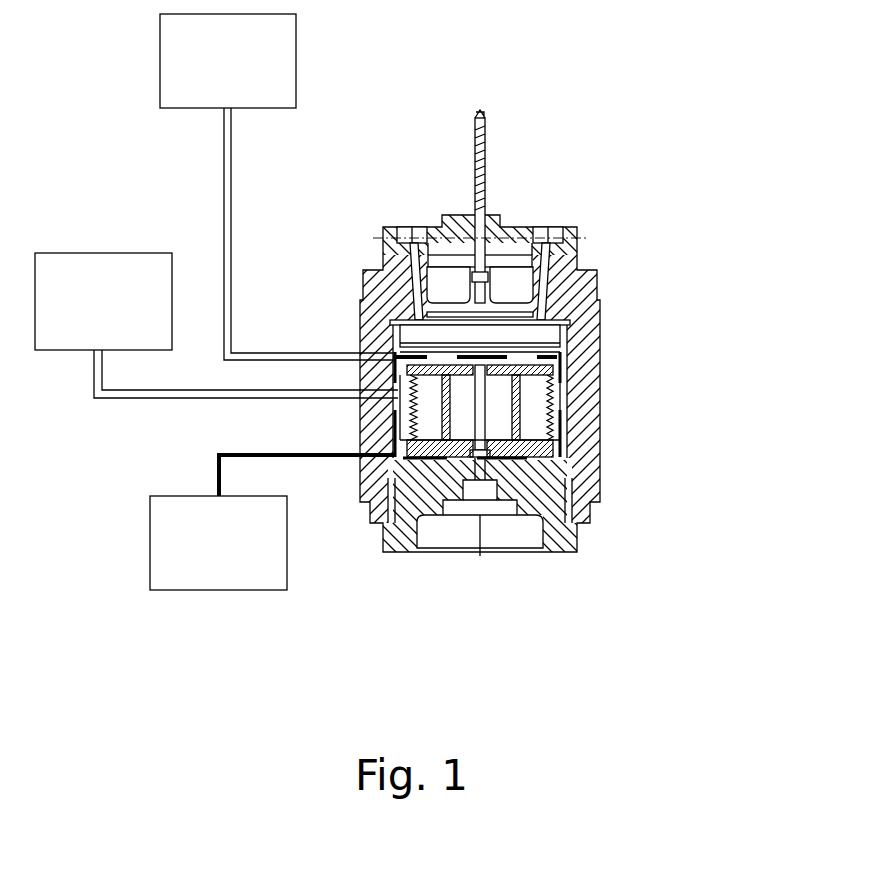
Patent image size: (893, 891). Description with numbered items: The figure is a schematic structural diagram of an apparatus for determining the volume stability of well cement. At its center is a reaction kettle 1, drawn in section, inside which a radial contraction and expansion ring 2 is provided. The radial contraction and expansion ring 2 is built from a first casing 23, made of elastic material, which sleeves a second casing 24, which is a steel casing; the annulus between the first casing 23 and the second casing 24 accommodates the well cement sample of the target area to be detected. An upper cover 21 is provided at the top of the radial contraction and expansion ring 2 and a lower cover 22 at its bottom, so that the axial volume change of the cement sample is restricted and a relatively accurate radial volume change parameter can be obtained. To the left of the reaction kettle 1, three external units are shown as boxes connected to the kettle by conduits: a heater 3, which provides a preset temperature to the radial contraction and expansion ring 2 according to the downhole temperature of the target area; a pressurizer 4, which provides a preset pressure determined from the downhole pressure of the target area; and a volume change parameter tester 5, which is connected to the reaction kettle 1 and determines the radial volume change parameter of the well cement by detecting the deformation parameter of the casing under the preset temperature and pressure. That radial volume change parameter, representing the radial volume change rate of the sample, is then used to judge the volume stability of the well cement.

The reaction kettle 1 is at (590, 305).
The radial contraction and expansion ring 2 is at (579, 398).
The upper cover 21 is at (555, 350).
The lower cover 22 is at (548, 452).
The first casing 23 is at (552, 400).
The second casing 24 is at (556, 432).
The heater 3 is at (277, 187).
The pressurizer 4 is at (216, 325).
The volume change parameter tester 5 is at (273, 522).